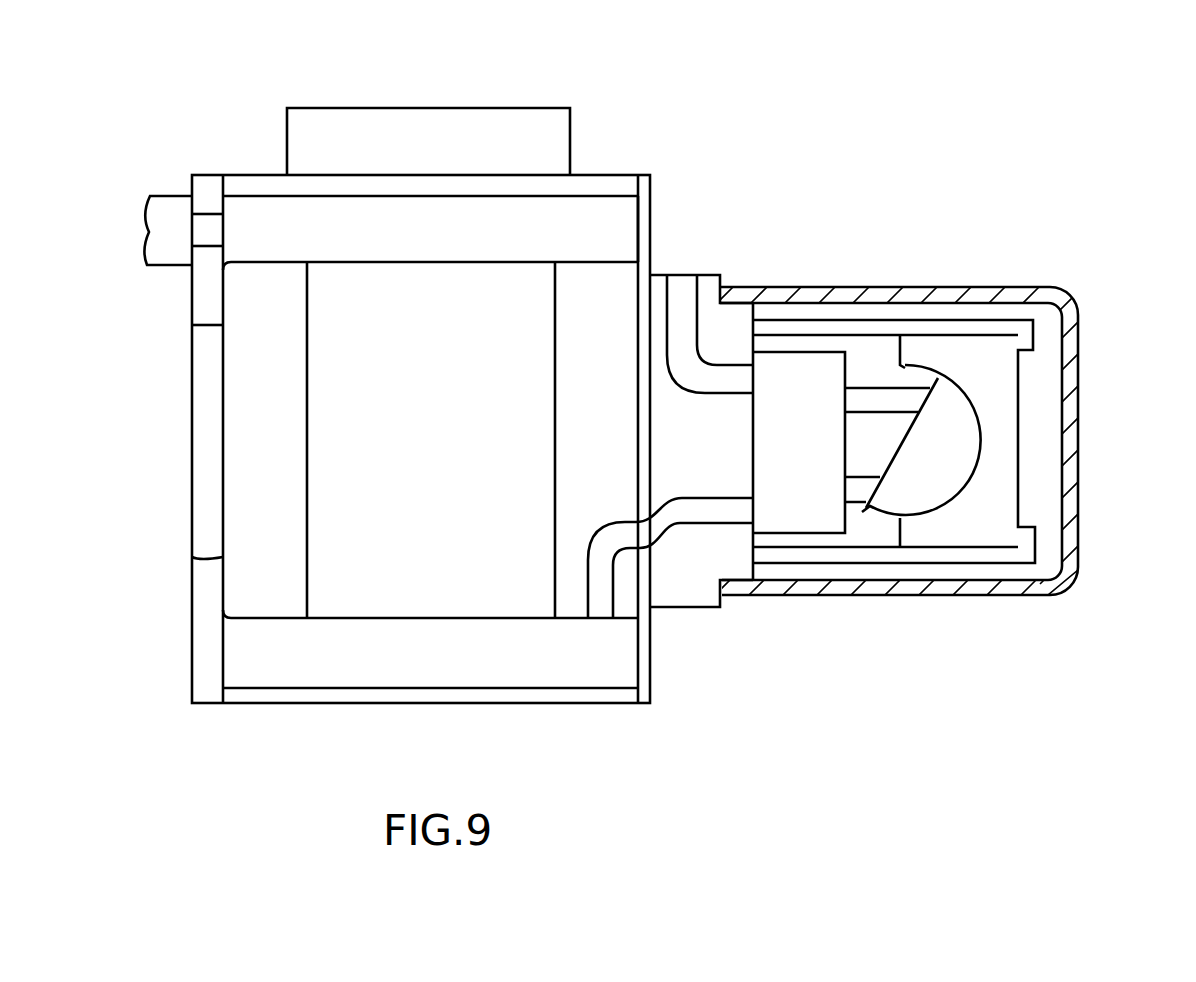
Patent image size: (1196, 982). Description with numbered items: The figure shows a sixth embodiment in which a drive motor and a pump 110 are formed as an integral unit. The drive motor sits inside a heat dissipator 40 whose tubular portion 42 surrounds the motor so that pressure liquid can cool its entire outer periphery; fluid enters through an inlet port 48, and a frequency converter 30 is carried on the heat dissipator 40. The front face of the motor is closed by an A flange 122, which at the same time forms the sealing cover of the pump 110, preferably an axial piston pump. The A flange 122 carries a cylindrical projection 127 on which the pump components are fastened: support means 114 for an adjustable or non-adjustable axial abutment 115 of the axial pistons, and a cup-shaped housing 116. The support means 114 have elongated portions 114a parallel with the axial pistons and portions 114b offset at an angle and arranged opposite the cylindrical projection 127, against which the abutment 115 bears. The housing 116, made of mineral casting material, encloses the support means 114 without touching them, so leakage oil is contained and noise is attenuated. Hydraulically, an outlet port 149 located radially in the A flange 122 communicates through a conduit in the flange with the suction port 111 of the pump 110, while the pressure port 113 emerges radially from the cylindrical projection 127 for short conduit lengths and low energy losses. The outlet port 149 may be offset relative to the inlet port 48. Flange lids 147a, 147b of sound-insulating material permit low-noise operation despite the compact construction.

The frequency converter 30 is at (402, 133).
The heat dissipator 40 is at (555, 692).
The tubular portion 42 is at (367, 705).
The inlet port 48 is at (167, 222).
The pump 110 is at (1094, 586).
The suction port 111 is at (670, 513).
The pressure port 113 is at (682, 292).
The support means 114 is at (868, 332).
The elongated portions 114a is at (820, 325).
The angularly offset portions 114b is at (1027, 325).
The axial abutment 115 is at (1003, 383).
The housing 116 is at (1033, 586).
The A flange 122 is at (605, 292).
The cylindrical projection 127 is at (710, 295).
The flange lid 147a is at (648, 663).
The flange lid 147b is at (204, 660).
The outlet port 149 is at (605, 562).